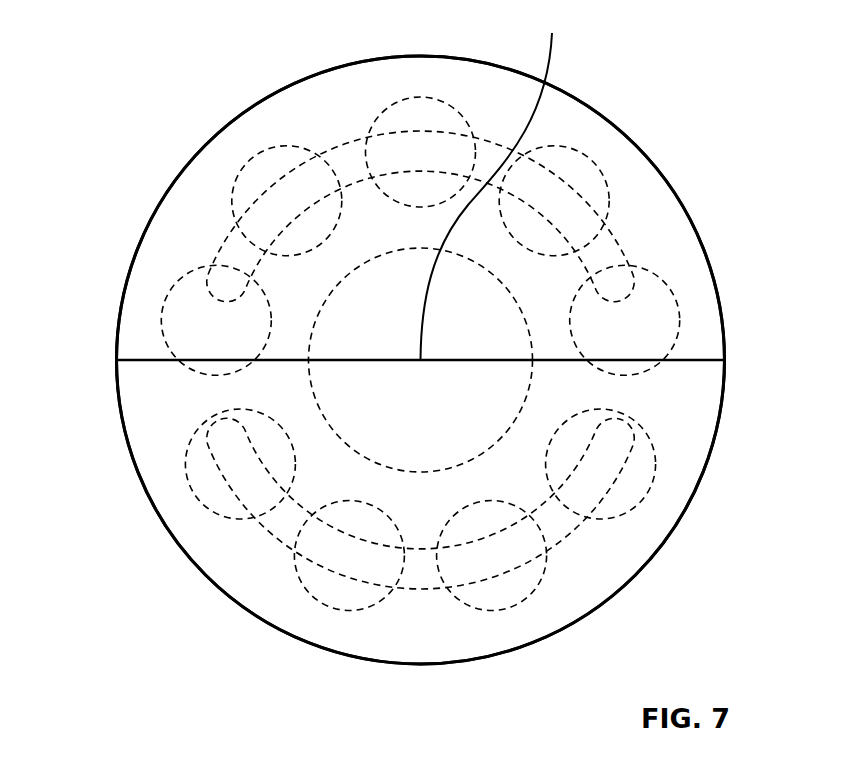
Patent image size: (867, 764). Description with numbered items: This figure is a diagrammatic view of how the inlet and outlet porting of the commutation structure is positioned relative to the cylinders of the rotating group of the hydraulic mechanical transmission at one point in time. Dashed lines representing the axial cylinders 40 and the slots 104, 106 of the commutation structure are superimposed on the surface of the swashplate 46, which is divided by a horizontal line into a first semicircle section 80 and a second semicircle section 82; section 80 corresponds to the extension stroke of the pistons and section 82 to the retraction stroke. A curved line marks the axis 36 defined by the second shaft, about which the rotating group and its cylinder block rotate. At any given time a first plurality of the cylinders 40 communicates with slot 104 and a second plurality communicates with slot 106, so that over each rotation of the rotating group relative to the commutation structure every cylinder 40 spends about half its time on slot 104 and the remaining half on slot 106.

The axis 36 is at (494, 183).
The axial cylinders 40 is at (162, 315).
The swashplate 46 is at (665, 172).
The first semicircle section 80 is at (324, 93).
The second semicircle section 82 is at (437, 650).
The slot 104 is at (223, 238).
The slot 106 is at (565, 530).